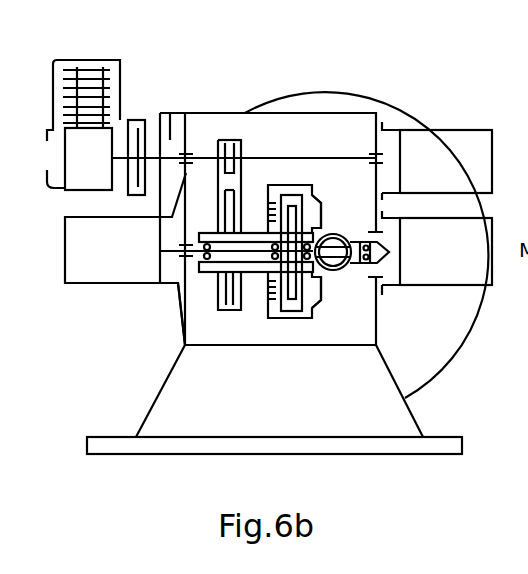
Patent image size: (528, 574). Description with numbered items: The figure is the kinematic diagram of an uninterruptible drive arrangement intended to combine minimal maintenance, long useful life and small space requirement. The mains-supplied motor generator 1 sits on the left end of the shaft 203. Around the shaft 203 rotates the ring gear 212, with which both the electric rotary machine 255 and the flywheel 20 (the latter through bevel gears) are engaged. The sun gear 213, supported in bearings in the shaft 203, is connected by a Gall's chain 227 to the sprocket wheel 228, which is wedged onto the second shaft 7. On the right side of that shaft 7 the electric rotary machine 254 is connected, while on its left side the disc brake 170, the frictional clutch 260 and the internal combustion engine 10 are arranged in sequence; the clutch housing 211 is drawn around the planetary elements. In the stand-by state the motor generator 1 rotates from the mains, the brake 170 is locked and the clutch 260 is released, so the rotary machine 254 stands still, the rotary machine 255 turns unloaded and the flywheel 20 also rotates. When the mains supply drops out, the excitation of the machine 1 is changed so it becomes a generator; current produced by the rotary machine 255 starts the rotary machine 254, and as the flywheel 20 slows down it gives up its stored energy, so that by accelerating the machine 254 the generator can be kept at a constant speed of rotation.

The motor generator 1 is at (64, 252).
The shaft 7 is at (268, 158).
The internal combustion engine 10 is at (62, 76).
The flywheel 20 is at (174, 301).
The disc brake 170 is at (165, 111).
The shaft 203 is at (243, 253).
The clutch housing 211 is at (294, 311).
The ring gear 212 is at (313, 193).
The sun gear 213 is at (266, 275).
The Gall's chain 227 is at (240, 200).
The sprocket wheel 228 is at (229, 140).
The electric rotary machine 254 is at (477, 135).
The electric rotary machine 255 is at (468, 276).
The frictional clutch 260 is at (141, 120).